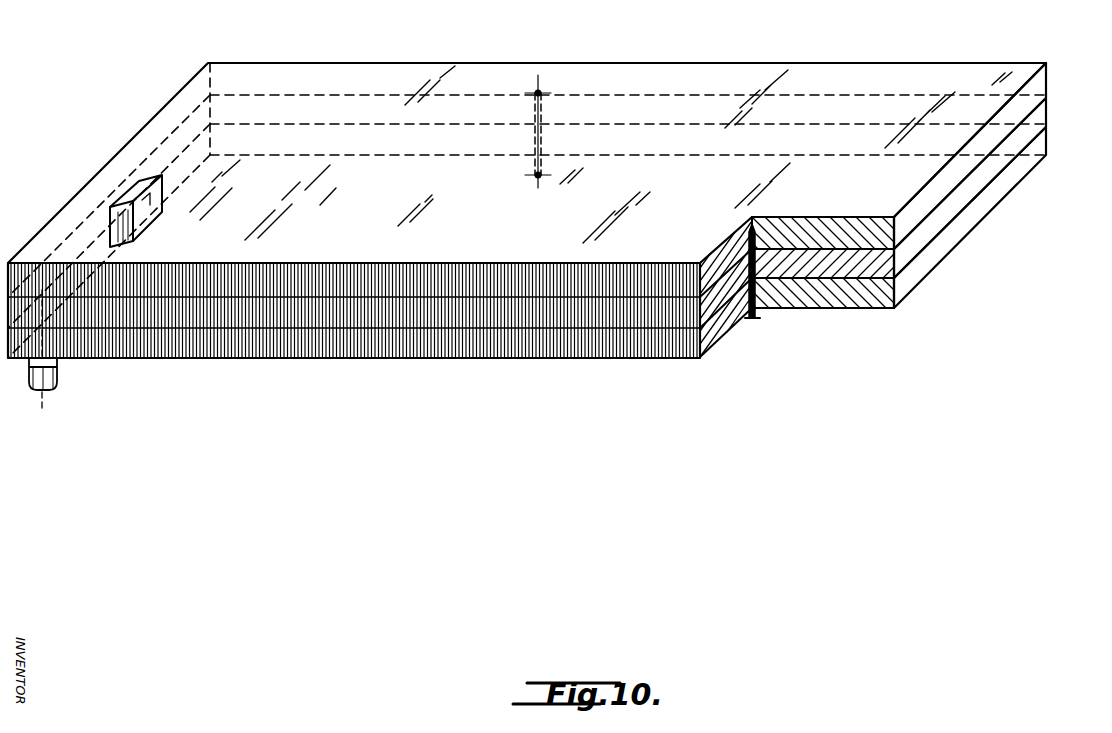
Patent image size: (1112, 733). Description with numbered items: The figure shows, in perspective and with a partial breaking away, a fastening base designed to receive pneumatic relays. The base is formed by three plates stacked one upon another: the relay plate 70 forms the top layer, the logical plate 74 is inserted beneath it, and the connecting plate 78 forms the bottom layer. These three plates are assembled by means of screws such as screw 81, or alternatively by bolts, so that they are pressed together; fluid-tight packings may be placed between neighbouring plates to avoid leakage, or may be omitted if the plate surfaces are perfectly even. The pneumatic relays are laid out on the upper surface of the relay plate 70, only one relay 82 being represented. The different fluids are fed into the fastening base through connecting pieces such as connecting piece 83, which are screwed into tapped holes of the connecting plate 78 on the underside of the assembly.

The relay plate 70 is at (1020, 108).
The logical plate 74 is at (1025, 132).
The connecting plate 78 is at (975, 211).
The screw 81 is at (749, 318).
The relay 82 is at (125, 192).
The connecting piece 83 is at (30, 383).